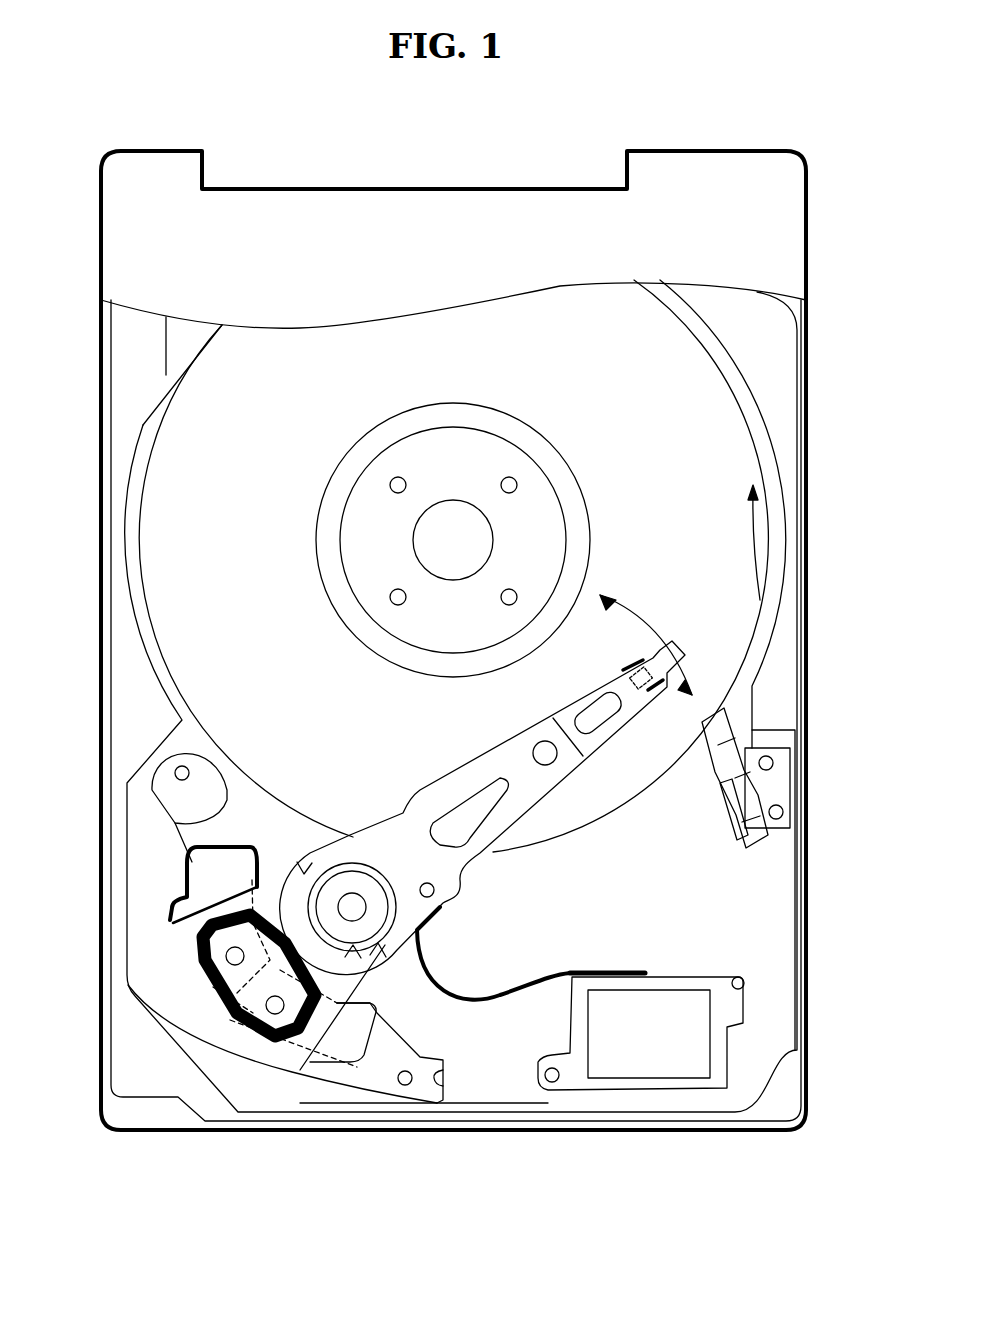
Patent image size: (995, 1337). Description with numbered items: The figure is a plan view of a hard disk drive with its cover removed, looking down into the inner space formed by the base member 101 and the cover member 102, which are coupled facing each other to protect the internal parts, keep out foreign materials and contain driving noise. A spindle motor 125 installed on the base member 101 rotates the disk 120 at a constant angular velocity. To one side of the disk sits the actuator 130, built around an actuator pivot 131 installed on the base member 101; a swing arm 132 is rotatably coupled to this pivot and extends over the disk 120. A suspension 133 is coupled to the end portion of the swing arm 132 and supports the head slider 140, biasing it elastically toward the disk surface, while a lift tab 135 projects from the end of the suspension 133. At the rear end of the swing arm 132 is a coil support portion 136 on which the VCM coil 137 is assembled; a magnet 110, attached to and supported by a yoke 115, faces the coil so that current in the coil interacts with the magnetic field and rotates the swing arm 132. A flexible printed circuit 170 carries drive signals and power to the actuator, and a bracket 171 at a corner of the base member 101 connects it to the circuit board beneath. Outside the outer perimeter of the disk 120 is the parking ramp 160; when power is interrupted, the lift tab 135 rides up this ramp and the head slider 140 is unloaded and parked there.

The base member 101 is at (778, 350).
The cover member 102 is at (725, 162).
The magnet 110 is at (323, 1053).
The yoke 115 is at (377, 1082).
The disk 120 is at (730, 430).
The spindle motor 125 is at (545, 525).
The actuator 130 is at (486, 776).
The actuator pivot 131 is at (372, 920).
The swing arm 132 is at (467, 855).
The suspension 133 is at (585, 740).
The lift tab 135 is at (672, 650).
The coil support portion 136 is at (192, 965).
The VCM coil 137 is at (215, 987).
The head slider 140 is at (638, 690).
The parking ramp 160 is at (730, 732).
The flexible printed circuit 170 is at (575, 972).
The bracket 171 is at (735, 1005).